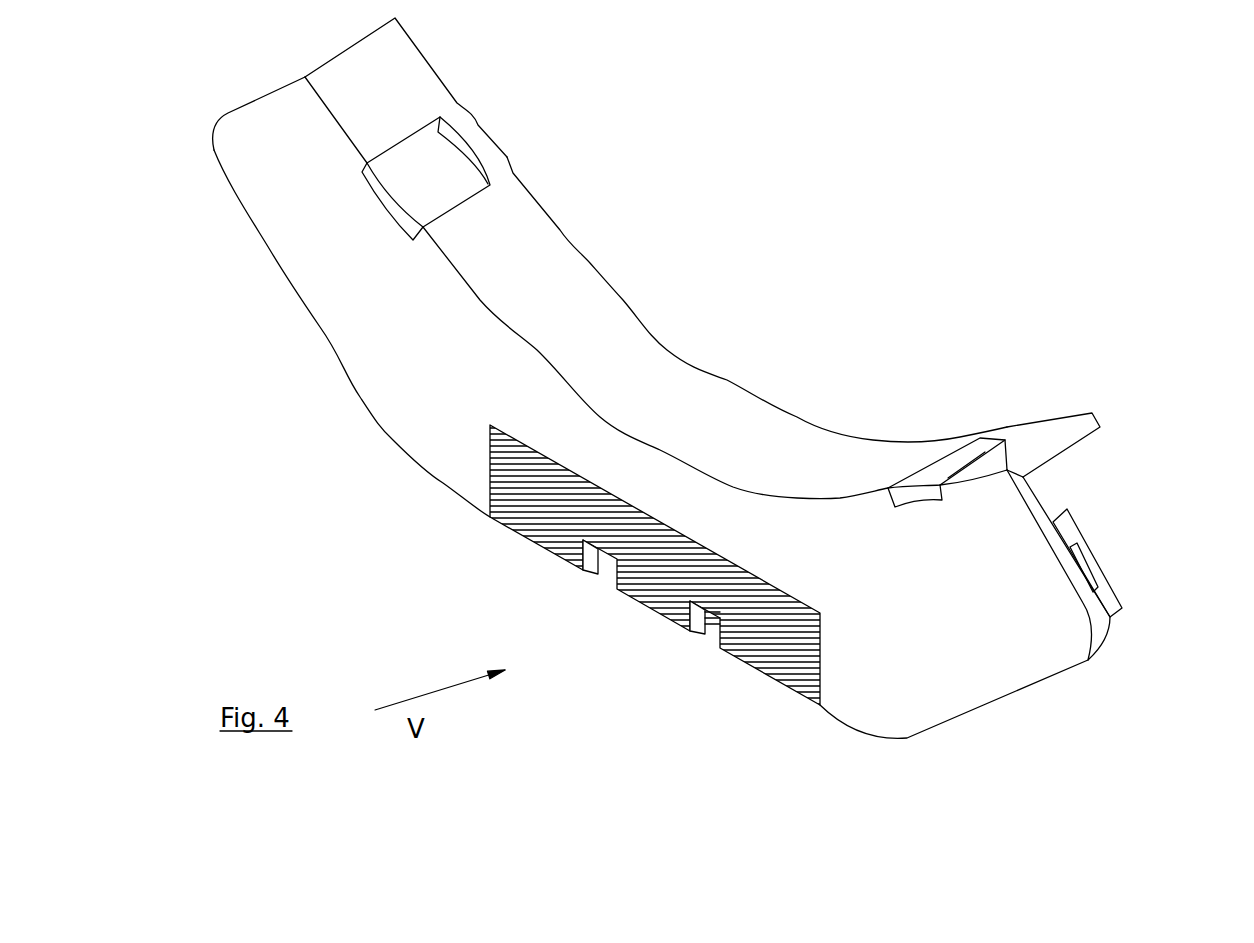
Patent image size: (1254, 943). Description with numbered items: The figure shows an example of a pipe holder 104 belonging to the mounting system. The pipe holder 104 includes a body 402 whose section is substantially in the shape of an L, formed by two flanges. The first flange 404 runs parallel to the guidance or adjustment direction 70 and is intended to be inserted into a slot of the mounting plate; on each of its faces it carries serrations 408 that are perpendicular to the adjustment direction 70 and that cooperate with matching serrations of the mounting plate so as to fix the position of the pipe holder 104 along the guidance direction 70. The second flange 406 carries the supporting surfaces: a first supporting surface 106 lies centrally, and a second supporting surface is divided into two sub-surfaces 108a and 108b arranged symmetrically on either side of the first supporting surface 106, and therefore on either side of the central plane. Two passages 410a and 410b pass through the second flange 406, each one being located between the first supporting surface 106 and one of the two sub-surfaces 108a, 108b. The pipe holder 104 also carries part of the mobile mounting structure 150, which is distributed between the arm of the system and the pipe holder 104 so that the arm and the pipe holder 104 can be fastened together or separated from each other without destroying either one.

The adjustment direction 70 is at (787, 92).
The pipe holder 104 is at (1048, 165).
The first supporting surface 106 is at (698, 405).
The sub-surface of the second supporting surface 108a is at (1023, 445).
The sub-surface of the second supporting surface 108b is at (393, 78).
The mobile mounting structure 150 is at (1092, 568).
The body 402 is at (303, 78).
The first flange 404 is at (317, 278).
The second flange 406 is at (563, 270).
The serrations 408 is at (522, 507).
The passage 410a is at (972, 458).
The passage 410b is at (443, 180).